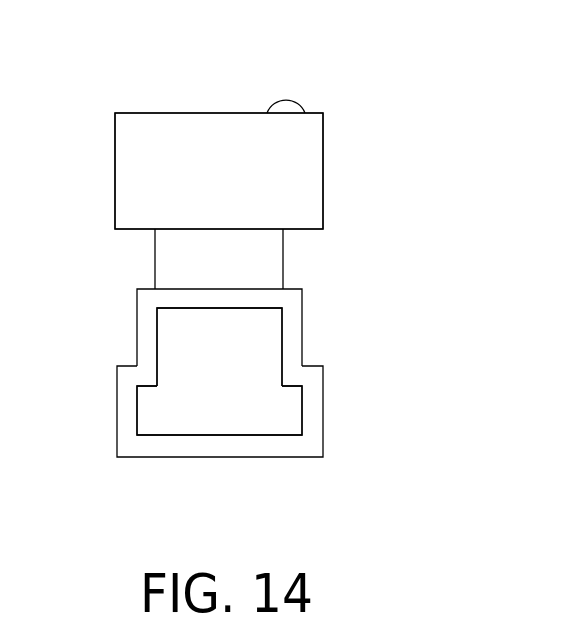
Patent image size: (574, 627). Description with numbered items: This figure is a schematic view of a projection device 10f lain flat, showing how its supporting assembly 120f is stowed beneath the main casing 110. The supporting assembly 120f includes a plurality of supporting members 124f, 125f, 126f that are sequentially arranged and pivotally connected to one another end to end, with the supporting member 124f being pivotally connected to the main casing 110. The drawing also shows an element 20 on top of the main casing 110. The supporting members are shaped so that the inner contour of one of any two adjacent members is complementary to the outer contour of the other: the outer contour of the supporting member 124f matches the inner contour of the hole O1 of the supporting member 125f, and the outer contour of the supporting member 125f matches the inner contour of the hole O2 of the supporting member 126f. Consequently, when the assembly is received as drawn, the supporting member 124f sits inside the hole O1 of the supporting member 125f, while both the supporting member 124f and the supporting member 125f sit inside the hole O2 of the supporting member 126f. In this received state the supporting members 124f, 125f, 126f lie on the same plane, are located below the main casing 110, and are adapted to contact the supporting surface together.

The projection device 10f is at (133, 89).
The lens 20 is at (288, 108).
The main casing 110 is at (313, 148).
The supporting assembly 120f is at (298, 365).
The supporting member 124f is at (268, 263).
The supporting member 125f is at (293, 330).
The supporting member 126f is at (263, 411).
The hole O1 is at (170, 359).
The hole O2 is at (148, 424).